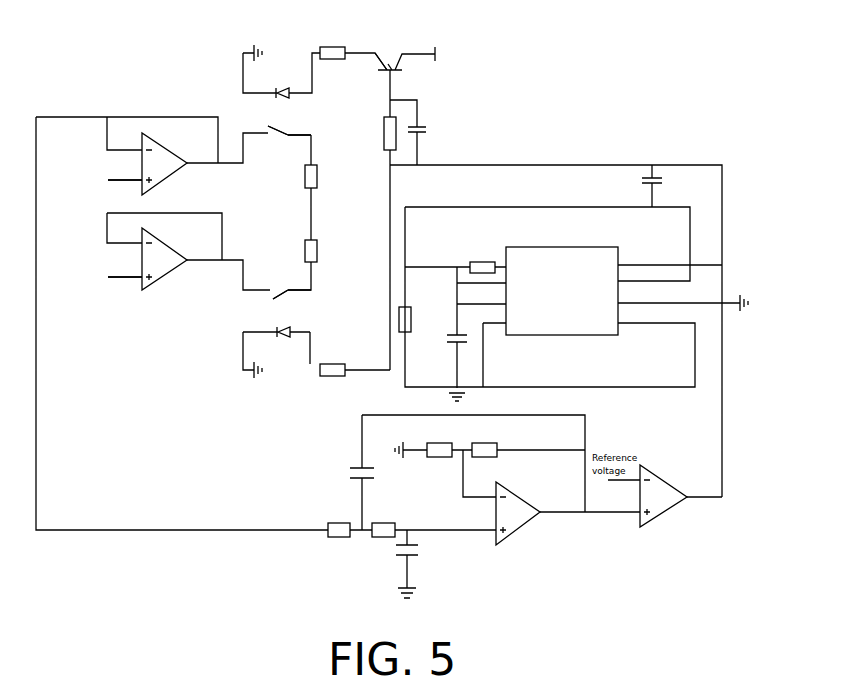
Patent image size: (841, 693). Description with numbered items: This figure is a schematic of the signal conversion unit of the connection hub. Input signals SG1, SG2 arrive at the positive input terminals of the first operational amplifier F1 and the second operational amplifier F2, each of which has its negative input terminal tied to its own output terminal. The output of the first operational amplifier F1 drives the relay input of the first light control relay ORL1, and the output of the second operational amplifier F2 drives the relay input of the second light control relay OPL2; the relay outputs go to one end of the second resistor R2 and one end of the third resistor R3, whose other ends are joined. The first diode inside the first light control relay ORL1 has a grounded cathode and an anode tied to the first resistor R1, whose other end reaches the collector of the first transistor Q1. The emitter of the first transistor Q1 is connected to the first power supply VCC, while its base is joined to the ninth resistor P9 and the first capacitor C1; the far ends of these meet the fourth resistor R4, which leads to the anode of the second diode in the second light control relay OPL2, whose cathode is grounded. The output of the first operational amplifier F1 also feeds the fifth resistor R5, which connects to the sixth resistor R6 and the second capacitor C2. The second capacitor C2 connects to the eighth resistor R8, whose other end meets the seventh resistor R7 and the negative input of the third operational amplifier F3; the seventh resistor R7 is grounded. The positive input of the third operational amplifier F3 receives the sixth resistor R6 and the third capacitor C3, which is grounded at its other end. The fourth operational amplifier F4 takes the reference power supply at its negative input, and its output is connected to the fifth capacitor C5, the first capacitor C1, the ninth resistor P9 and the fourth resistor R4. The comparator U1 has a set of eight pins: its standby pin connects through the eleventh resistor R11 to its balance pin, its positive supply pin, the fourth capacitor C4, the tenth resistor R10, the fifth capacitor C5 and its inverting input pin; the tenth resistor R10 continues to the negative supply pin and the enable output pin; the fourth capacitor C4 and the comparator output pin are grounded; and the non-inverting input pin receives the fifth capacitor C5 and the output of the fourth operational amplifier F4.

The first operational amplifier F1 is at (166, 163).
The second operational amplifier F2 is at (166, 259).
The third operational amplifier F3 is at (518, 513).
The fourth operational amplifier F4 is at (664, 496).
The input signal SG1 is at (107, 181).
The input signal SG2 is at (107, 278).
The first light control relay ORL1 is at (299, 124).
The second light control relay OPL2 is at (304, 307).
The first resistor R1 is at (332, 46).
The second resistor R2 is at (320, 176).
The third resistor R3 is at (320, 251).
The fourth resistor R4 is at (332, 363).
The fifth resistor R5 is at (339, 522).
The sixth resistor R6 is at (383, 522).
The seventh resistor R7 is at (439, 442).
The eighth resistor R8 is at (484, 442).
The tenth resistor R10 is at (417, 319).
The eleventh resistor R11 is at (482, 260).
The ninth resistor P9 is at (379, 133).
The first transistor Q1 is at (405, 52).
The first power supply VCC is at (449, 54).
The first capacitor C1 is at (426, 129).
The second capacitor C2 is at (346, 474).
The third capacitor C3 is at (416, 553).
The fourth capacitor C4 is at (451, 347).
The fifth capacitor C5 is at (639, 186).
The comparator U1 is at (562, 283).